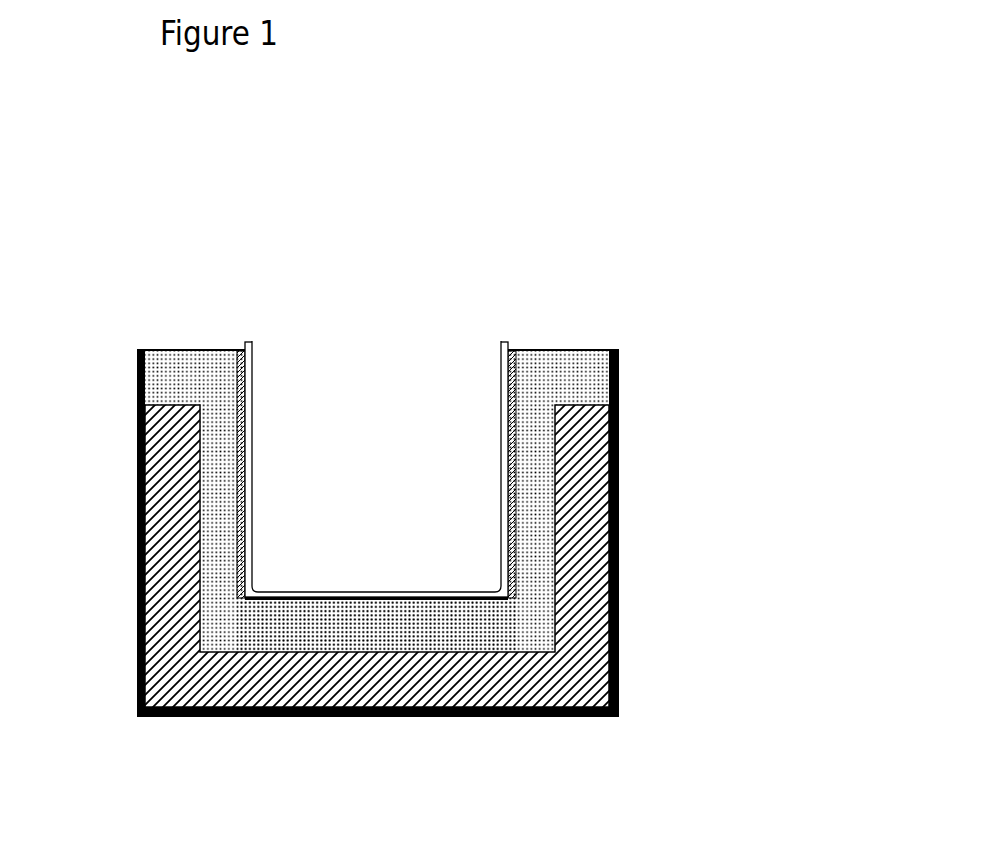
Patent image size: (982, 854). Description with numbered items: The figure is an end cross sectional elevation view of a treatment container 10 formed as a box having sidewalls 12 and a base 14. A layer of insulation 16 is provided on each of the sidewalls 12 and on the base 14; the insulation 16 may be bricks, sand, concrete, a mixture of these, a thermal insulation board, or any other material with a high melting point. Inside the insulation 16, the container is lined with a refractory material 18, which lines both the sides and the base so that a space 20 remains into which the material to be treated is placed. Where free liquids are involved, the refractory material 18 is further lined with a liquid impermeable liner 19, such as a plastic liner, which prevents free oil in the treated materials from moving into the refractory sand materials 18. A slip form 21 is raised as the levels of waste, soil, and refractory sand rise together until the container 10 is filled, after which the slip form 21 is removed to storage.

The container 10 is at (751, 320).
The sidewalls 12 is at (138, 485).
The base 14 is at (412, 715).
The insulation 16 is at (202, 683).
The refractory material 18 is at (312, 608).
The liquid impermeable liner 19 is at (503, 338).
The space 20 is at (369, 312).
The slip form 21 is at (243, 420).